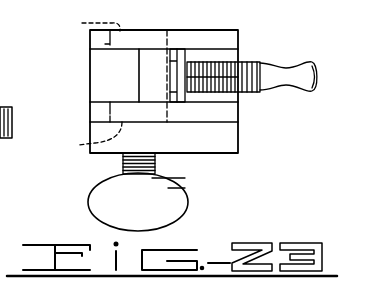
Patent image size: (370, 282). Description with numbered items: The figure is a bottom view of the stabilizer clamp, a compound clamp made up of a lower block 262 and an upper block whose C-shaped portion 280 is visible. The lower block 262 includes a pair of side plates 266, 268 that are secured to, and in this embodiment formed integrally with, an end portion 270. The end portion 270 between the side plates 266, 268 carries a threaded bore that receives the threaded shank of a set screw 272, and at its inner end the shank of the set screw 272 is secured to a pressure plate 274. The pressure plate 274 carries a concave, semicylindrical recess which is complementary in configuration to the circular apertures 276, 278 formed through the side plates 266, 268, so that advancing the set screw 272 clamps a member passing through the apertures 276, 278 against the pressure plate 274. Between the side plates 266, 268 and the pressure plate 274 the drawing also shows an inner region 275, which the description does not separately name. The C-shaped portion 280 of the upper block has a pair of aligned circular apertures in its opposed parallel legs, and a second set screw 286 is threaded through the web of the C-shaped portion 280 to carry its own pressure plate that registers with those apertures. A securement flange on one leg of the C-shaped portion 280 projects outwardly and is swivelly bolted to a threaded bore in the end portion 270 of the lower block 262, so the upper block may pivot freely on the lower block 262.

The lower block 262 is at (238, 33).
The side plate 266 is at (97, 40).
The side plate 268 is at (92, 118).
The end portion 270 is at (217, 108).
The set screw 272 is at (286, 63).
The pressure plate 274 is at (144, 58).
The chamber 275 is at (95, 70).
The circular aperture 276 is at (82, 23).
The circular aperture 278 is at (78, 144).
The C-shaped portion 280 is at (202, 150).
The set screw 286 is at (112, 192).